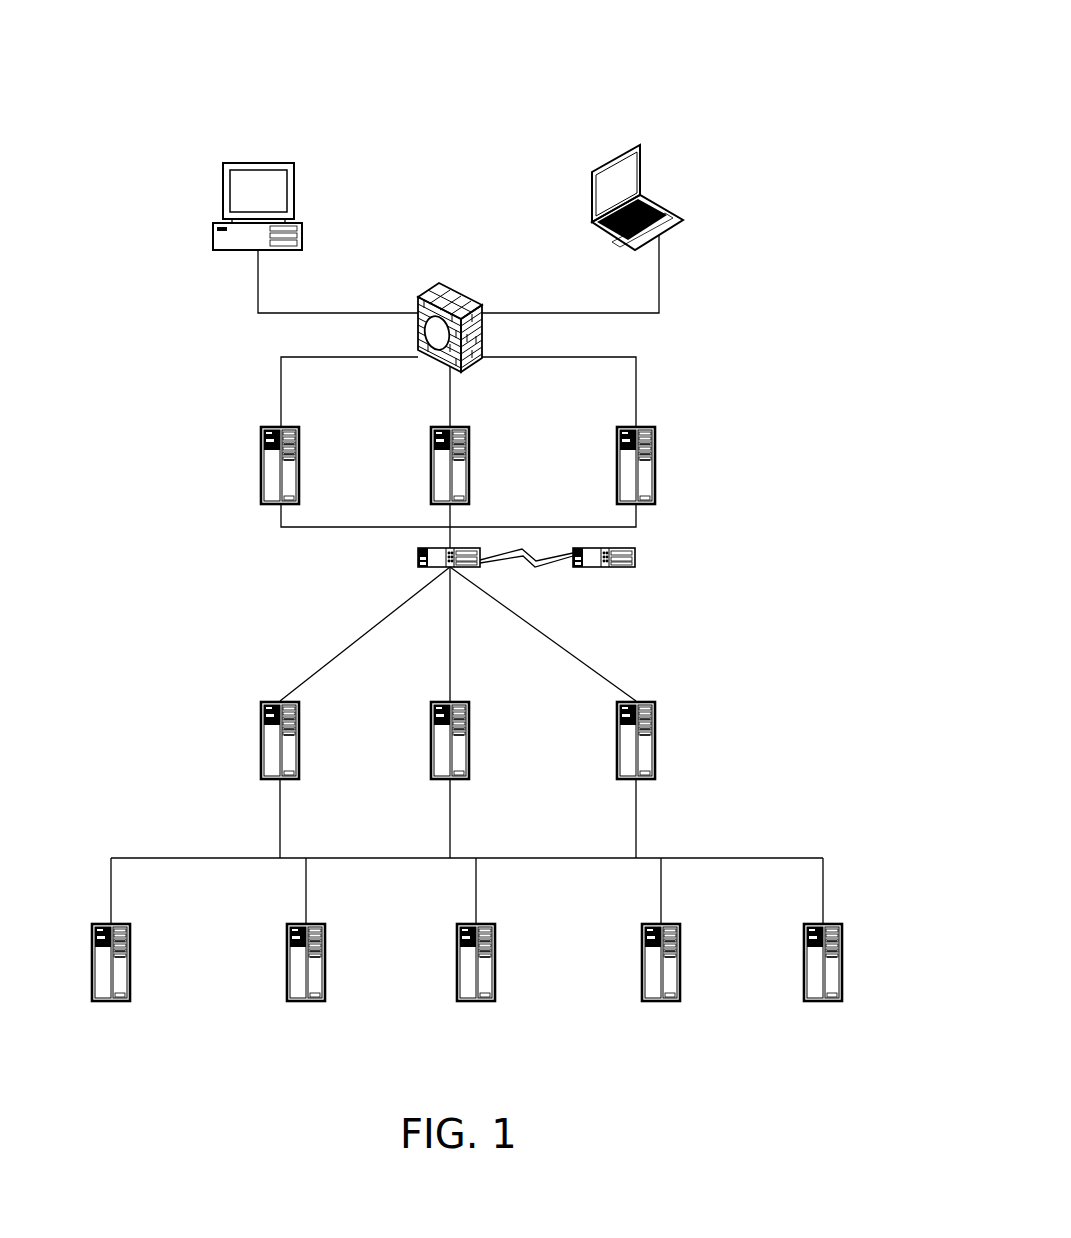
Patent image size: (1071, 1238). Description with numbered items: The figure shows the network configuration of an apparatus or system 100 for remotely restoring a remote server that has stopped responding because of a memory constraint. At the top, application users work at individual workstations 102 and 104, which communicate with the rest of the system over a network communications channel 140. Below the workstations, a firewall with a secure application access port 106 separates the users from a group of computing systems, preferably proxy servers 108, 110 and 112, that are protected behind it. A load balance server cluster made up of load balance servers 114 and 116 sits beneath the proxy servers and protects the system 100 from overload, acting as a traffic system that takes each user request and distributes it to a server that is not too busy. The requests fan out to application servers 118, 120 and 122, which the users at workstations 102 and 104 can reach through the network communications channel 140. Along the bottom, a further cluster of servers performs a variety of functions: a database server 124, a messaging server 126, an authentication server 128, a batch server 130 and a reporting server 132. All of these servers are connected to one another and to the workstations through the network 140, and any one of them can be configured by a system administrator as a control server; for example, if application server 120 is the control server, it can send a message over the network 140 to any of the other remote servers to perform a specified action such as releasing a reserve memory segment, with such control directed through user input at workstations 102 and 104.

The system 100 is at (732, 66).
The workstation 102 is at (223, 190).
The workstation 104 is at (643, 171).
The secure application access port 106 is at (483, 337).
The proxy server 108 is at (260, 474).
The proxy server 110 is at (430, 466).
The proxy server 112 is at (658, 465).
The load balance server 114 is at (418, 558).
The load balance server 116 is at (636, 558).
The application server 118 is at (260, 752).
The application server 120 is at (430, 762).
The application server 122 is at (616, 758).
The database server 124 is at (92, 992).
The messaging server 126 is at (286, 985).
The authentication server 128 is at (456, 985).
The batch server 130 is at (641, 985).
The reporting server 132 is at (803, 982).
The network communications channel 140 is at (748, 858).